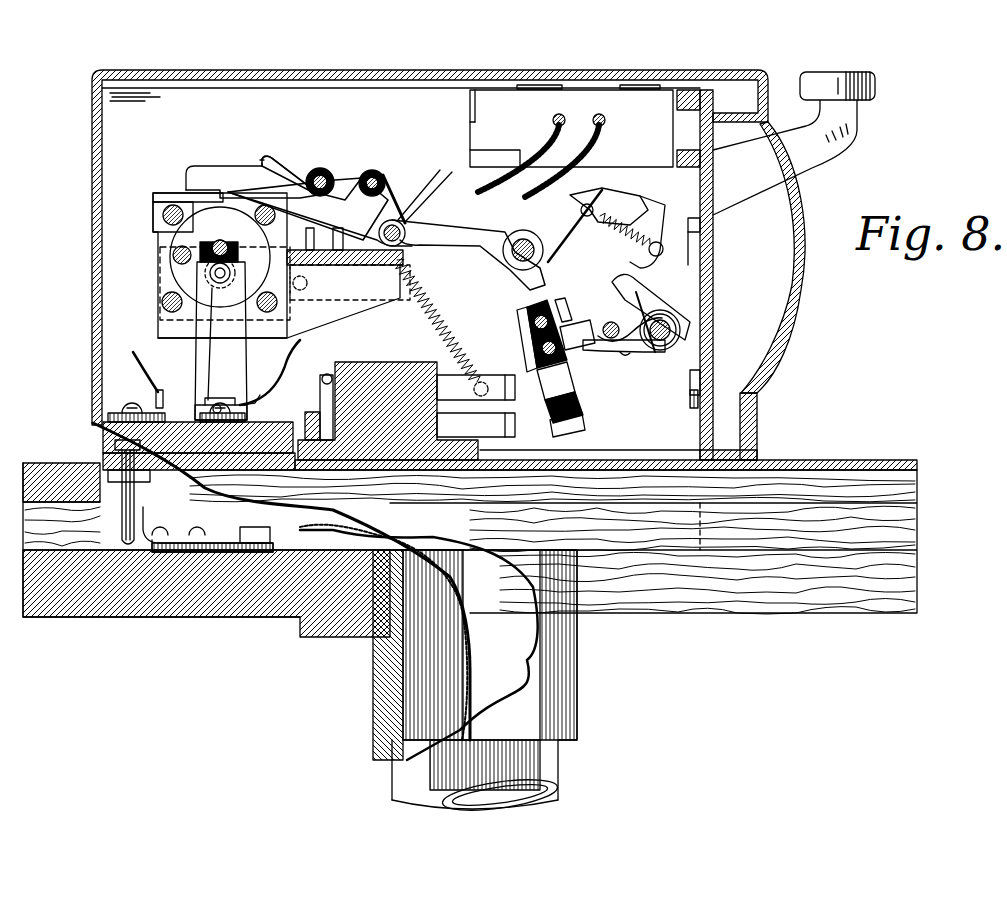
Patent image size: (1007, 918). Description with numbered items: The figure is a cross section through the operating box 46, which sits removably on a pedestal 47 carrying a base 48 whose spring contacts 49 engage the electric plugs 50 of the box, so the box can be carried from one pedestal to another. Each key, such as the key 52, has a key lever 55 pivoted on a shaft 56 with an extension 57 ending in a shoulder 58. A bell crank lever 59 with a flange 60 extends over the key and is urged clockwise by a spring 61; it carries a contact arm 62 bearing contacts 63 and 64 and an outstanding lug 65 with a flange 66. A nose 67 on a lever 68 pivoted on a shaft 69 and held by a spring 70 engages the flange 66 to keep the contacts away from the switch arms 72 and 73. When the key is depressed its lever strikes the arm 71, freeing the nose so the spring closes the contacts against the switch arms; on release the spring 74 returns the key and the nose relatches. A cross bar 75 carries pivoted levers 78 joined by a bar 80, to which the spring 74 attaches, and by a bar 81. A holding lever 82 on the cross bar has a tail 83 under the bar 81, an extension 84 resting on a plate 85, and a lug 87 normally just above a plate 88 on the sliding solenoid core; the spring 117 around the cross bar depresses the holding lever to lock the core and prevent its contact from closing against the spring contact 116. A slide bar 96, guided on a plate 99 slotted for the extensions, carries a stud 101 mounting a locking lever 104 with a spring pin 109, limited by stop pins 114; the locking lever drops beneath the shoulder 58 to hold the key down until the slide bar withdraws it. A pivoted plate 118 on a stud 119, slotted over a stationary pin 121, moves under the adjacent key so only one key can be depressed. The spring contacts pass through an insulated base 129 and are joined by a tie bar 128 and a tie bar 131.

The operating box 46 is at (92, 178).
The pedestal 47 is at (558, 770).
The base 48 is at (262, 617).
The spring contacts 49 is at (175, 545).
The electric plugs 50 is at (130, 545).
The key 52 is at (850, 74).
The key lever 55 is at (815, 150).
The shaft 56 is at (510, 240).
The extension 57 is at (445, 250).
The shoulder 58 is at (388, 300).
The bell crank lever 59 is at (590, 165).
The flange 60 is at (630, 215).
The spring 61 is at (662, 240).
The contact arm 62 is at (527, 340).
The contact 63 is at (570, 385).
The contact 64 is at (582, 420).
The outstanding lug 65 is at (565, 320).
The flange 66 is at (578, 326).
The nose 67 is at (625, 356).
The lever 68 is at (650, 352).
The shaft 69 is at (670, 328).
The spring 70 is at (650, 330).
The arm 71 is at (630, 295).
The switch arm 72 is at (490, 376).
The switch arm 73 is at (500, 425).
The spring 74 is at (455, 340).
The cross bar 75 is at (322, 168).
The lever 78 is at (392, 190).
The bar 80 is at (404, 232).
The bar 81 is at (372, 176).
The holding lever 82 is at (242, 166).
The tail 83 is at (358, 190).
The extension 84 is at (190, 166).
The plate 85 is at (175, 200).
The lug 87 is at (176, 232).
The plate 88 is at (165, 262).
The slide bar 96 is at (340, 266).
The plate 99 is at (335, 290).
The stud 101 is at (295, 280).
The locking lever 104 is at (405, 240).
The pin 109 is at (305, 238).
The stop pins 114 is at (220, 300).
The spring contact 116 is at (205, 356).
The spring 117 is at (300, 178).
The pivoted plate 118 is at (713, 270).
The stud 119 is at (700, 380).
The stationary pin 121 is at (700, 226).
The tie bar 128 is at (307, 413).
The insulated base 129 is at (360, 366).
The tie bar 131 is at (325, 376).